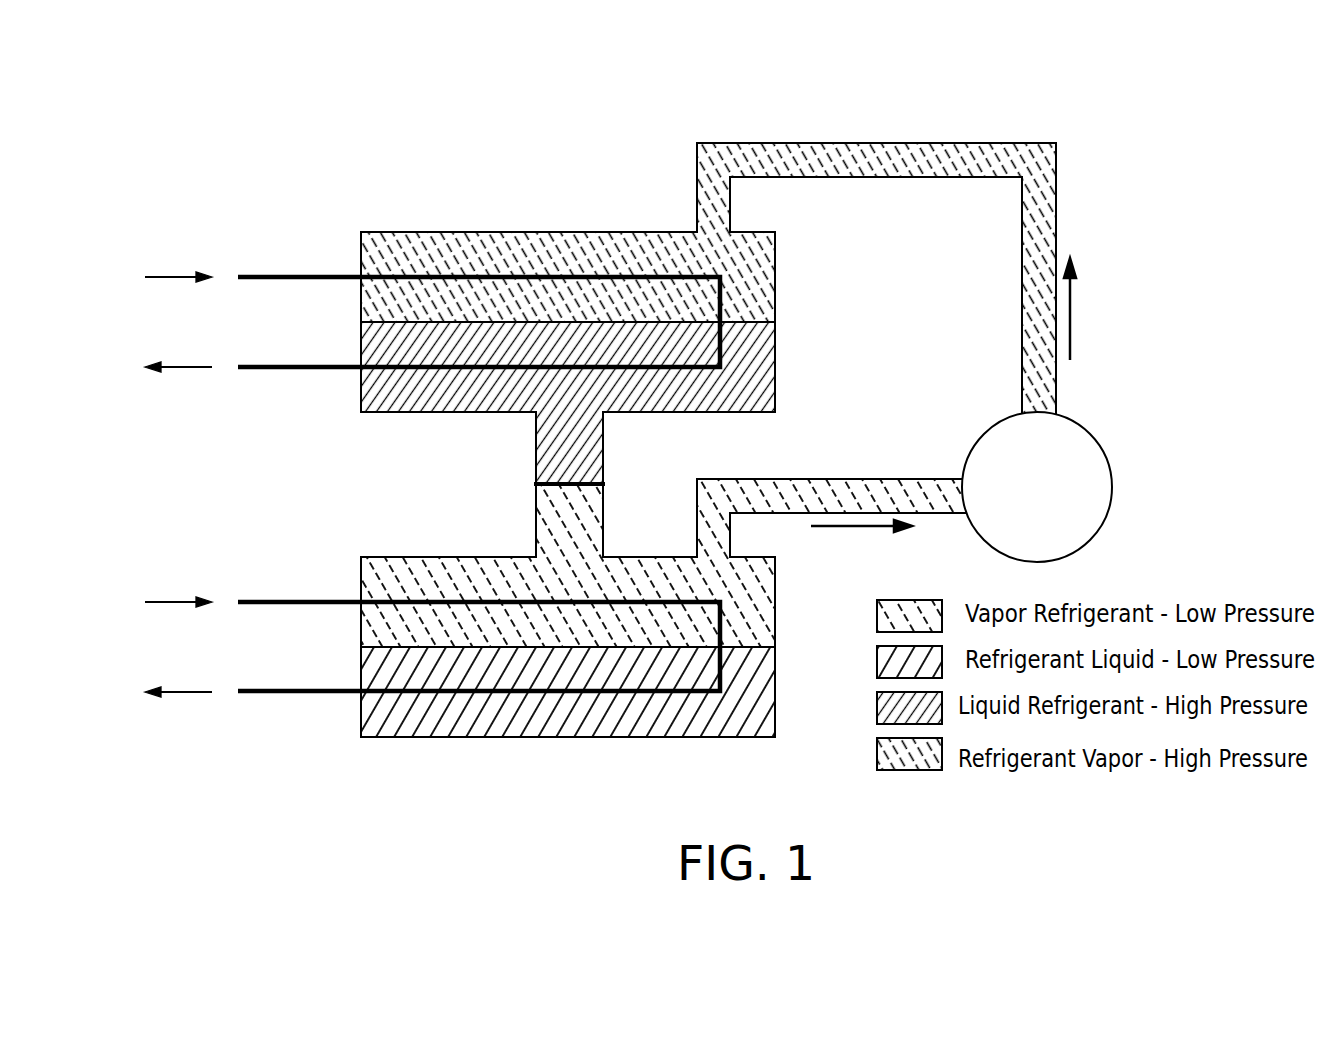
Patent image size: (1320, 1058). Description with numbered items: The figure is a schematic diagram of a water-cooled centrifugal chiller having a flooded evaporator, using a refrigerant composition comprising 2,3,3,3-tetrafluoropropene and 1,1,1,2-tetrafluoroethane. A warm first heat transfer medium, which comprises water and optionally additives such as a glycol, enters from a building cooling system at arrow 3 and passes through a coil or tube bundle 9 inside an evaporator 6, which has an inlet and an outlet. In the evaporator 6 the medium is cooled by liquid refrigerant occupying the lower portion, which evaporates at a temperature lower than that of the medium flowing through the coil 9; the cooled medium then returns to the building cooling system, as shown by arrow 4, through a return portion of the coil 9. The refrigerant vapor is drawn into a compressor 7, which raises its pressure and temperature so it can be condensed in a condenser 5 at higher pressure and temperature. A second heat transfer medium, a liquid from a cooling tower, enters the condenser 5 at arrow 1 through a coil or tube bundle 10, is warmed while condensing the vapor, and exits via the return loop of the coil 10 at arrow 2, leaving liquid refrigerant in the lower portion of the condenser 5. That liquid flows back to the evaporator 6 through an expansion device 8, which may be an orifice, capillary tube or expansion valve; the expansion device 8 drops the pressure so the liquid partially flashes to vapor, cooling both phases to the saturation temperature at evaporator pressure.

The arrow (second heat transfer medium inlet) 1 is at (164, 279).
The arrow (second heat transfer medium return) 2 is at (164, 368).
The arrow (first heat transfer medium inlet) 3 is at (165, 603).
The arrow (first heat transfer medium return) 4 is at (164, 693).
The condenser 5 is at (521, 232).
The evaporator 6 is at (522, 737).
The compressor 7 is at (978, 433).
The expansion device 8 is at (536, 483).
The coil or tube bundle 9 is at (408, 603).
The coil or tube bundle 10 is at (408, 280).